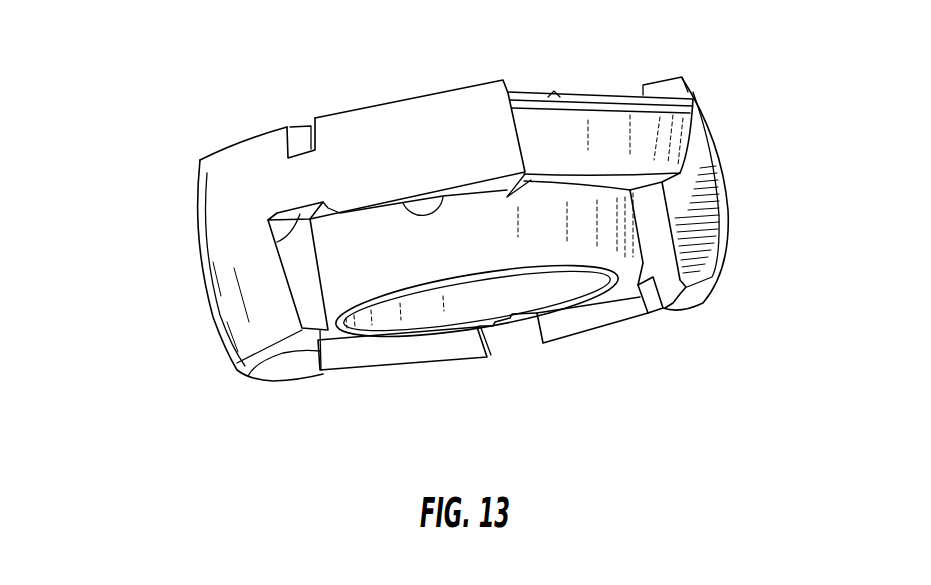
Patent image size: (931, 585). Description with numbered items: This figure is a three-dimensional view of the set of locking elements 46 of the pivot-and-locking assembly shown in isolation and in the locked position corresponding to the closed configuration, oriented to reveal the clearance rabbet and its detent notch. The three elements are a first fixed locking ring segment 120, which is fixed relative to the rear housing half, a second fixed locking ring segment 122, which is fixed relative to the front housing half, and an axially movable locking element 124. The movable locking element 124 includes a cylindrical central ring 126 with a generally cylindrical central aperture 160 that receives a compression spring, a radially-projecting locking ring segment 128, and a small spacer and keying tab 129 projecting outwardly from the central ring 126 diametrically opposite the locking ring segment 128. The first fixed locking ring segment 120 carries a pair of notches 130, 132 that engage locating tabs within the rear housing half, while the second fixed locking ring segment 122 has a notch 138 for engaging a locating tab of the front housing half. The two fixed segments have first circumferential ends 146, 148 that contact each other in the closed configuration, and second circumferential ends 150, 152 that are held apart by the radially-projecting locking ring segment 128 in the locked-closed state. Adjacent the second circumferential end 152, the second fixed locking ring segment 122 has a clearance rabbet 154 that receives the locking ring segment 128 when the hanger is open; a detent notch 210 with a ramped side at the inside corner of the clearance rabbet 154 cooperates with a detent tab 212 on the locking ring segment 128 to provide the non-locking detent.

The locking elements 46 is at (124, 136).
The first fixed locking ring segment 120 is at (732, 230).
The second fixed locking ring segment 122 is at (213, 280).
The movable locking element 124 is at (652, 305).
The central ring 126 is at (613, 250).
The radially-projecting locking ring segment 128 is at (608, 127).
The spacer and keying tab 129 is at (493, 360).
The notch 130 is at (527, 337).
The notch 132 is at (658, 308).
The notch 138 is at (299, 132).
The first circumferential end 146 is at (312, 345).
The first circumferential end 148 is at (327, 362).
The second circumferential end 150 is at (670, 83).
The second circumferential end 152 is at (522, 143).
The clearance rabbet 154 is at (443, 188).
The central aperture 160 is at (465, 293).
The detent notch 210 is at (277, 242).
The detent tab 212 is at (523, 93).